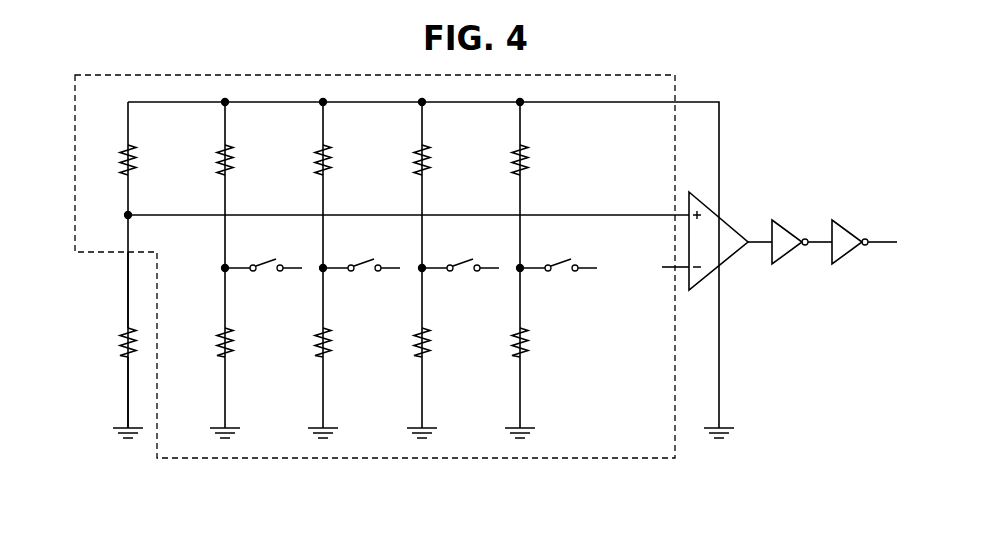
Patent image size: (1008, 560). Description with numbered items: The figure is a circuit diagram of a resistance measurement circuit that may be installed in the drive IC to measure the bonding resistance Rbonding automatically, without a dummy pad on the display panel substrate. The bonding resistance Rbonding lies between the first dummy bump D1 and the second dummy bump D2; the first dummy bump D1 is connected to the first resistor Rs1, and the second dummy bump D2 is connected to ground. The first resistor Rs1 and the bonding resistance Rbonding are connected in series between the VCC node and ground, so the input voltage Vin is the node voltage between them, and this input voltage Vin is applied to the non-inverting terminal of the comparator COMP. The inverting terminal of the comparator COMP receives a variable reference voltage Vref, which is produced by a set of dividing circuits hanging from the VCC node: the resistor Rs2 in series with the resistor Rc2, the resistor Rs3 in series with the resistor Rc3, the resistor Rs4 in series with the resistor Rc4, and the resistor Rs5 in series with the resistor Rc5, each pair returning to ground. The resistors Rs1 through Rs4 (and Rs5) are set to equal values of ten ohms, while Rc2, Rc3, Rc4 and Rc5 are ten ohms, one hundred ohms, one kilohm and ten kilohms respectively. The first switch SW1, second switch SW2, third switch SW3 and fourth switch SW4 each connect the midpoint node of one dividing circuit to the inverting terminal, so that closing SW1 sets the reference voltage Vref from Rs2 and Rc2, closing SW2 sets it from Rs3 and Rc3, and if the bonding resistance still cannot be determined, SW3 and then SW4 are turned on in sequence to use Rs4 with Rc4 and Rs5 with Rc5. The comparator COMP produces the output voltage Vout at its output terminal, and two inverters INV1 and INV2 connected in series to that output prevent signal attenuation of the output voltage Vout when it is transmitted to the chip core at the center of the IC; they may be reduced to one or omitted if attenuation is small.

The VCC node VCC is at (423, 252).
The input voltage Vin is at (407, 204).
The reference voltage Vref is at (481, 265).
The output voltage Vout is at (888, 231).
The first resistor Rs1 is at (109, 160).
The second resistor Rs2 is at (207, 160).
The third resistor Rs3 is at (305, 160).
The fourth resistor Rs4 is at (403, 160).
The fifth resistor Rs5 is at (502, 160).
The resistor Rc2 is at (203, 345).
The resistor Rc3 is at (297, 345).
The resistor Rc4 is at (399, 345).
The resistor Rc5 is at (494, 345).
The bonding resistance Rbonding is at (90, 342).
The first dummy bump D1 is at (115, 290).
The second dummy bump D2 is at (115, 392).
The first switch SW1 is at (262, 275).
The second switch SW2 is at (360, 275).
The third switch SW3 is at (459, 275).
The fourth switch SW4 is at (557, 275).
The comparator COMP is at (731, 214).
The first inverter INV1 is at (791, 224).
The second inverter INV2 is at (845, 224).